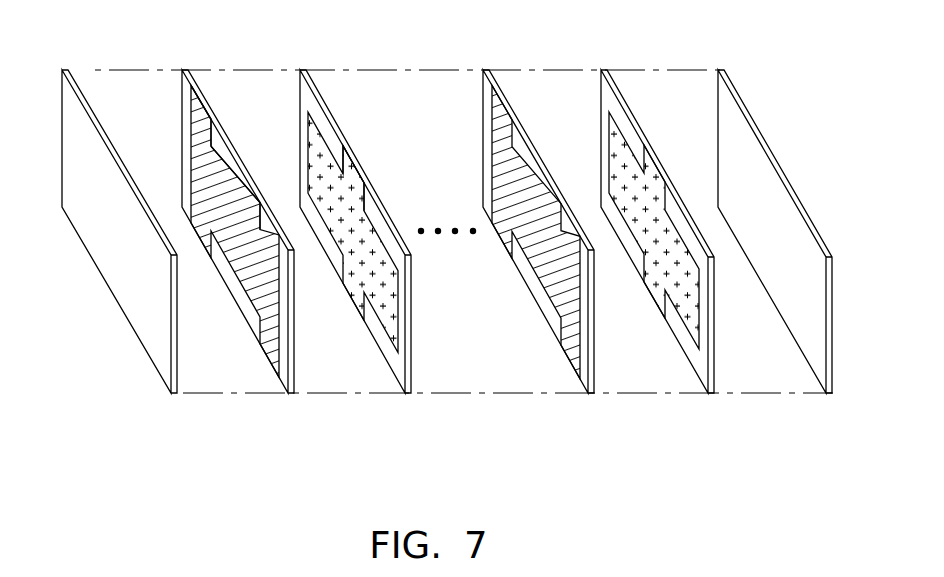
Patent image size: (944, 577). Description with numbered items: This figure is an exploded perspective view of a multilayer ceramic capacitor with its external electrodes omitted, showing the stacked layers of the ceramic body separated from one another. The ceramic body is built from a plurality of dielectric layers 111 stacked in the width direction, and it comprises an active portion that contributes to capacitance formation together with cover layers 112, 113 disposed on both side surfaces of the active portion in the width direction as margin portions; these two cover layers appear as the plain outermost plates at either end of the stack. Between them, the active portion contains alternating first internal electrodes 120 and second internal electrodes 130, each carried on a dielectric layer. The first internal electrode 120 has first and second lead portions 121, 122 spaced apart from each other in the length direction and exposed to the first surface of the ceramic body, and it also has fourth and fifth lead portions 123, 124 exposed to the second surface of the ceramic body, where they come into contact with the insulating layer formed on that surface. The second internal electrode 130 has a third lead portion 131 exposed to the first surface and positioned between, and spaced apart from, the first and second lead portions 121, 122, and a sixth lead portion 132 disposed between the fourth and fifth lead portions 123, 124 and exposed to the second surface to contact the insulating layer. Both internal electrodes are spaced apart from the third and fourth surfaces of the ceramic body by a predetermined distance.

The dielectric layer 111 is at (295, 260).
The cover layer 112 is at (145, 318).
The cover layer 113 is at (807, 327).
The first internal electrode 120 is at (223, 260).
The first lead portion 121 is at (202, 228).
The second lead portion 122 is at (276, 352).
The fourth lead portion 123 is at (203, 122).
The fifth lead portion 124 is at (258, 232).
The second internal electrode 130 is at (355, 260).
The third lead portion 131 is at (357, 288).
The sixth lead portion 132 is at (345, 172).